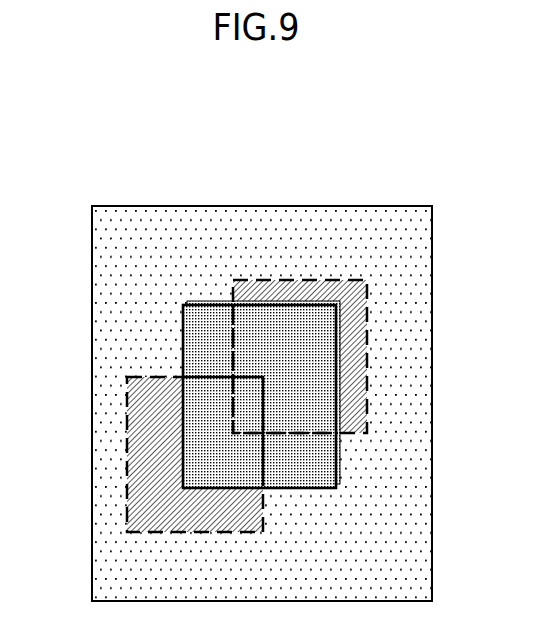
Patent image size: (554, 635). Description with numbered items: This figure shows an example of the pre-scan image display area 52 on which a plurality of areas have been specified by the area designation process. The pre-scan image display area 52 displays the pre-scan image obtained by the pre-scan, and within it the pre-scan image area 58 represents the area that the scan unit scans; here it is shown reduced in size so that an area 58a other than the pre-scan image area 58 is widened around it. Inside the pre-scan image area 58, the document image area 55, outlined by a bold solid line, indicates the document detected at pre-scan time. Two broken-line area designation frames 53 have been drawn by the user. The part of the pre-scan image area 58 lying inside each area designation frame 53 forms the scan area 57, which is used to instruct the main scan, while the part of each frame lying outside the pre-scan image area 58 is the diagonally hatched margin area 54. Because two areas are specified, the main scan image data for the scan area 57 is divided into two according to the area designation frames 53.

The pre-scan image display area 52 is at (265, 207).
The area other than the pre-scan image area 58a is at (418, 282).
The pre-scan image area 58 is at (217, 303).
The area designation frame 53 is at (127, 420).
The margin area 54 is at (354, 340).
The document image area 55 is at (337, 468).
The scan area 57 is at (298, 420).